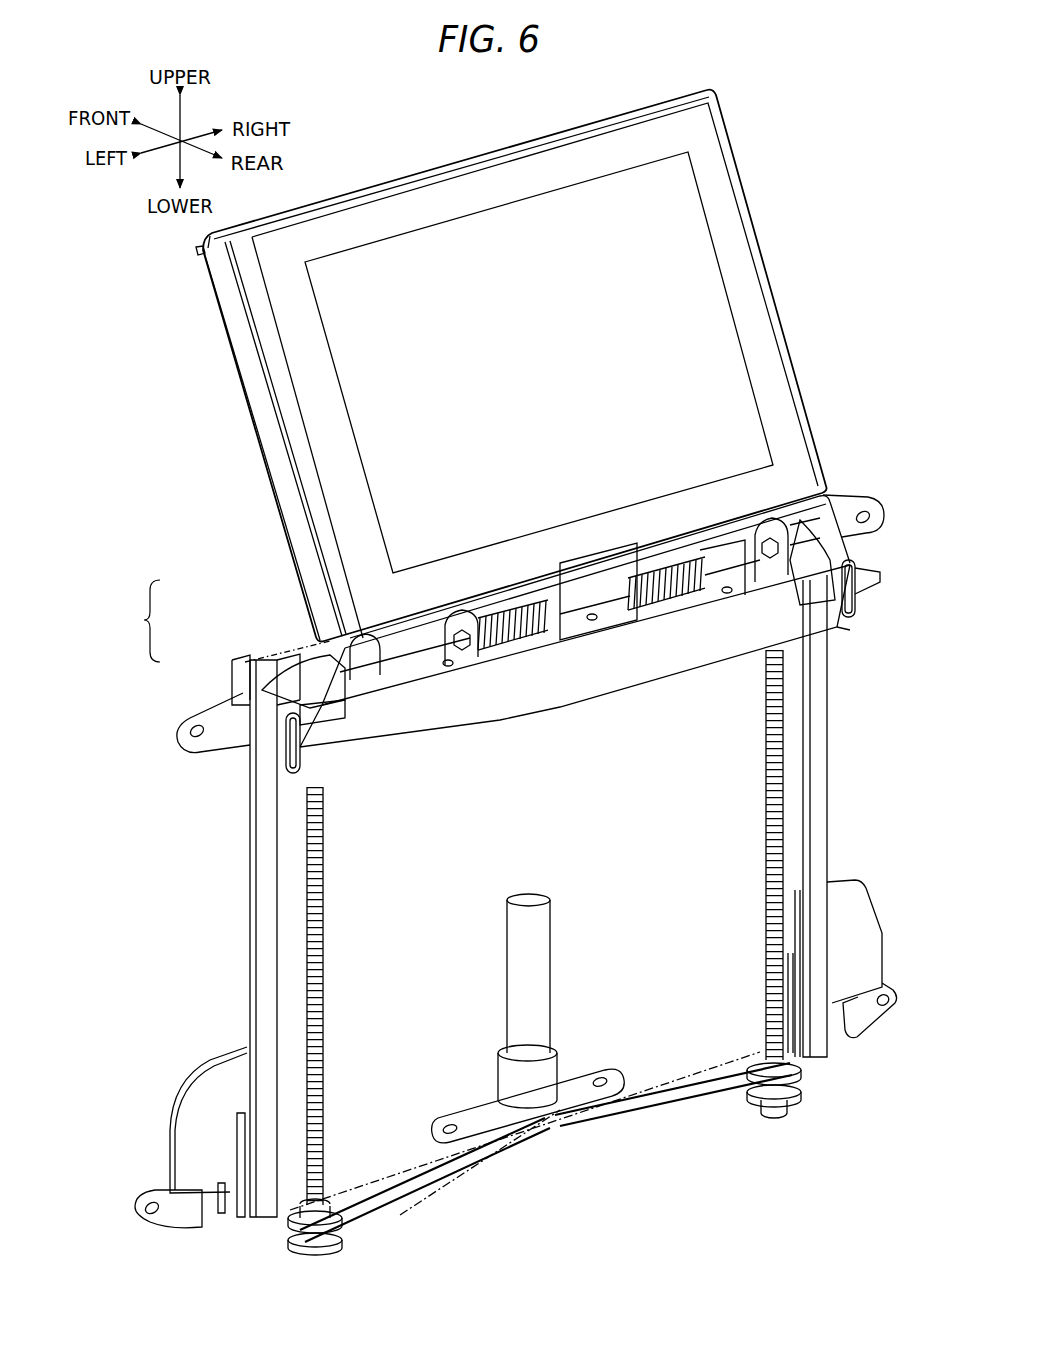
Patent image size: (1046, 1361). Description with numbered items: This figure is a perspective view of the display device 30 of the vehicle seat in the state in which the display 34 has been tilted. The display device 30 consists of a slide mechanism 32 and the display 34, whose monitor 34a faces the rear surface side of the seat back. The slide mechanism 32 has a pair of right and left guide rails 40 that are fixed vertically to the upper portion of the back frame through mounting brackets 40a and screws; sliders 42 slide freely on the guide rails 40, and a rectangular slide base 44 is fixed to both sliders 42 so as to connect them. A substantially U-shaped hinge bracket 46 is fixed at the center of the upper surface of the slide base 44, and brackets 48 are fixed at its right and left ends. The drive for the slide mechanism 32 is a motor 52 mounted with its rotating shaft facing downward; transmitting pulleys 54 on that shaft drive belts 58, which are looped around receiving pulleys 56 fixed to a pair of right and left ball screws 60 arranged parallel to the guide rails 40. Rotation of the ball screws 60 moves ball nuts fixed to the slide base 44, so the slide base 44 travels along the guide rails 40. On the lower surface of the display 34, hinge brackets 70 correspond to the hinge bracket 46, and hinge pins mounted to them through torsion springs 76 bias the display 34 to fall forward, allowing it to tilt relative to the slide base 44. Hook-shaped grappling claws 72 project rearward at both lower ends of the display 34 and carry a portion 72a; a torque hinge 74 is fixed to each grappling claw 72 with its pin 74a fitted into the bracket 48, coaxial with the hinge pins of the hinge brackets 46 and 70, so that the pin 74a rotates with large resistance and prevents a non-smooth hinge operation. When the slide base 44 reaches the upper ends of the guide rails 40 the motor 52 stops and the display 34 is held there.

The display device 30 is at (474, 147).
The display 34 is at (515, 142).
The monitor 34a is at (651, 268).
The slide mechanism 32 is at (138, 621).
The guide rail 40 is at (252, 645).
The mounting bracket 40a is at (838, 502).
The slider 42 is at (250, 705).
The slide base 44 is at (287, 740).
The hinge bracket 46 is at (593, 585).
The bracket 48 is at (848, 548).
The motor 52 is at (537, 942).
The transmitting pulley 54 is at (545, 1130).
The receiving pulley 56 is at (313, 1256).
The belt 58 is at (456, 1182).
The ball screw 60 is at (322, 1117).
The hinge bracket 70 is at (465, 657).
The grappling claw 72 is at (750, 572).
The support plate portion 72a is at (746, 556).
The torque hinge 74 is at (740, 620).
The pin 74a is at (307, 707).
The torsion spring 76 is at (530, 648).